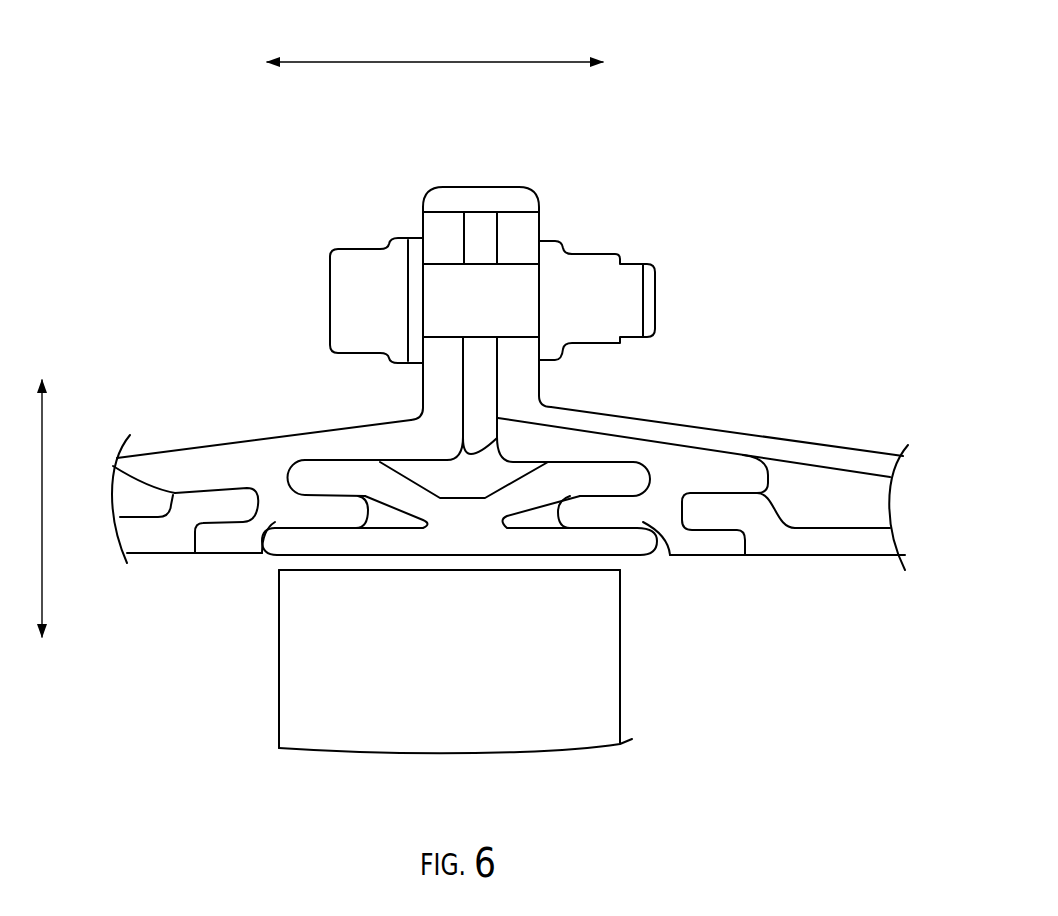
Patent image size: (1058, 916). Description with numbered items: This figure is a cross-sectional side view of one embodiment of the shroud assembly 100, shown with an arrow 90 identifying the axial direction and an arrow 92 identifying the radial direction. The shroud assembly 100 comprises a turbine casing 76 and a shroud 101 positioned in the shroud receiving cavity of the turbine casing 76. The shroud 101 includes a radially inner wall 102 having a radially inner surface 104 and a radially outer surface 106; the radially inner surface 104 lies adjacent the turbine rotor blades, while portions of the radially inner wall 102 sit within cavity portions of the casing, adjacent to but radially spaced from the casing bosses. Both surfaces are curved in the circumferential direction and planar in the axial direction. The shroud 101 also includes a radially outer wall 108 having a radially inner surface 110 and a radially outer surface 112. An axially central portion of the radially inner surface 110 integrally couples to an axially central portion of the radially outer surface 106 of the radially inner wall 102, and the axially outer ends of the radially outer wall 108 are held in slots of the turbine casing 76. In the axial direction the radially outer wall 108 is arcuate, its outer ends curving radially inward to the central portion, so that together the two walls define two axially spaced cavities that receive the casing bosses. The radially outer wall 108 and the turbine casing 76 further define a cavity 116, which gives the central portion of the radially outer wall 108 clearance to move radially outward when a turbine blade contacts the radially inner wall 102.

The arrow identifying the axial direction 90 is at (422, 62).
The arrow identifying the radial direction 92 is at (42, 505).
The shroud assembly 100 is at (172, 232).
The turbine casing 76 is at (227, 465).
The radially outer wall 108 is at (606, 480).
The radially outer surface 112 is at (413, 462).
The cavity 116 is at (472, 475).
The radially outer surface 106 is at (643, 520).
The radially inner wall 102 is at (623, 548).
The radially inner surface 104 is at (396, 556).
The radially inner surface 110 is at (398, 510).
The shroud 101 is at (434, 558).